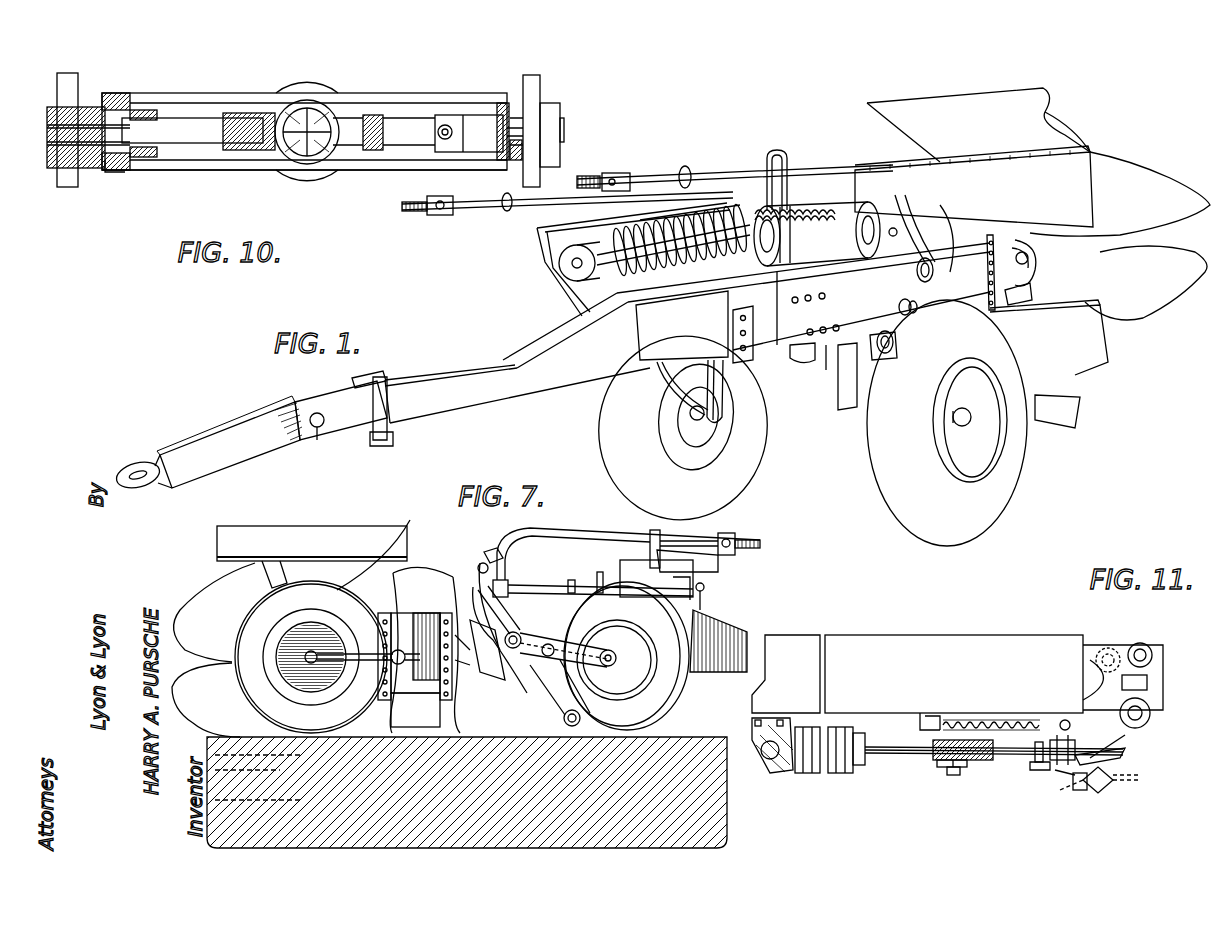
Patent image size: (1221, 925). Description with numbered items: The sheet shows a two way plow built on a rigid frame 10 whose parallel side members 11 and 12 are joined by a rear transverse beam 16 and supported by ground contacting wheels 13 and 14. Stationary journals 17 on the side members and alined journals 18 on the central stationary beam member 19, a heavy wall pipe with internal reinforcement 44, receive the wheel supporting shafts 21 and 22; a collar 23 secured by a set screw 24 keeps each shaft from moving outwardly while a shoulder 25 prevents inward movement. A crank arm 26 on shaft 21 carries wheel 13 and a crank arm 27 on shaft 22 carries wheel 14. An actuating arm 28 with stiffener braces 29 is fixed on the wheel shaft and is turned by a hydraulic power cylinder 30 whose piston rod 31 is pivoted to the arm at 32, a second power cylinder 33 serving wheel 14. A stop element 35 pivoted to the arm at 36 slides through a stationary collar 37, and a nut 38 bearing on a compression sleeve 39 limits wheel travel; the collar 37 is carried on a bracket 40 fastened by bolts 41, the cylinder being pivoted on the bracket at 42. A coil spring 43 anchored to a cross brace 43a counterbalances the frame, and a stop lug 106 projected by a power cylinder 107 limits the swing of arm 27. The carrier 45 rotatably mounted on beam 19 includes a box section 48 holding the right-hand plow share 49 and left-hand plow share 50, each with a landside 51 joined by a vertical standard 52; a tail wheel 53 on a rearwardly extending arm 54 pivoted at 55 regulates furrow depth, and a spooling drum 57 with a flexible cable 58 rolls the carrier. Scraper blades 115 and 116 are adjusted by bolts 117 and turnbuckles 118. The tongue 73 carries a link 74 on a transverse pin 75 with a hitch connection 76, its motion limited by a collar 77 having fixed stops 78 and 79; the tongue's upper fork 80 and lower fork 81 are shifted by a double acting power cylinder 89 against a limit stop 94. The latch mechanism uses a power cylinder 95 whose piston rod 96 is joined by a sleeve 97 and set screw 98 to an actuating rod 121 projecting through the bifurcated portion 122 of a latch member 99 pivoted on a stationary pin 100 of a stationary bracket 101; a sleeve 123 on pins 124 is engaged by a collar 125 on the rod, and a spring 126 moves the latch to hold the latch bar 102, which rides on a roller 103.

In FIG. 10, the rigid frame 10 is at (253, 184).
In FIG. 1, the rigid frame 10 is at (626, 353).
In FIG. 10, the side member 11 is at (118, 162).
In FIG. 10, the side member 12 is at (492, 170).
In FIG. 1, the side member 12 is at (880, 336).
In FIG. 1, the ground contacting wheel 13 is at (605, 435).
In FIG. 7, the ground contacting wheel 13 is at (690, 686).
In FIG. 1, the ground contacting wheel 14 is at (1010, 478).
In FIG. 7, the ground contacting wheel 14 is at (655, 733).
In FIG. 10, the rear transverse beam 16 is at (200, 95).
In FIG. 10, the stationary journal 17 is at (145, 112).
In FIG. 10, the alined journal 18 is at (250, 112).
In FIG. 10, the stationary beam member 19 is at (318, 112).
In FIG. 10, the wheel supporting shaft 21 is at (210, 142).
In FIG. 10, the wheel supporting shaft 22 is at (375, 148).
In FIG. 10, the collar 23 is at (153, 152).
In FIG. 10, the set screw 24 is at (447, 126).
In FIG. 10, the shoulder 25 is at (82, 170).
In FIG. 10, the crank arm 26 is at (62, 168).
In FIG. 1, the crank arm 26 is at (730, 408).
In FIG. 7, the crank arm 26 is at (585, 640).
In FIG. 10, the crank arm 27 is at (552, 140).
In FIG. 7, the crank arm 27 is at (585, 718).
In FIG. 1, the actuating arm 28 is at (925, 228).
In FIG. 7, the actuating arm 28 is at (478, 575).
In FIG. 1, the stiffener brace 29 is at (900, 225).
In FIG. 7, the stiffener brace 29 is at (500, 618).
In FIG. 1, the hydraulic power cylinder 30 is at (553, 290).
In FIG. 7, the hydraulic power cylinder 30 is at (700, 582).
In FIG. 7, the piston rod 31 is at (553, 586).
In FIG. 7, the pivotal connection 32 is at (505, 585).
In FIG. 1, the power cylinder 33 is at (823, 234).
In FIG. 1, the stop element 35 is at (738, 172).
In FIG. 7, the stop element 35 is at (605, 542).
In FIG. 7, the pivotal connection 36 is at (490, 552).
In FIG. 1, the stationary collar 37 is at (588, 176).
In FIG. 7, the stationary collar 37 is at (652, 540).
In FIG. 1, the nut 38 is at (618, 172).
In FIG. 7, the nut 38 is at (735, 536).
In FIG. 1, the compression sleeve 39 is at (683, 168).
In FIG. 7, the compression sleeve 39 is at (685, 542).
In FIG. 1, the bracket 40 is at (566, 308).
In FIG. 7, the bracket 40 is at (735, 558).
In FIG. 1, the bolt 41 is at (830, 345).
In FIG. 1, the pivotal mounting 42 is at (560, 270).
In FIG. 7, the pivotal mounting 42 is at (708, 596).
In FIG. 1, the coil spring 43 is at (650, 258).
In FIG. 1, the stationary cross brace 43a is at (700, 205).
In FIG. 10, the internal reinforcement 44 is at (320, 160).
In FIG. 1, the carrier 45 is at (1040, 246).
In FIG. 7, the carrier 45 is at (431, 689).
In FIG. 7, the box section 48 is at (428, 645).
In FIG. 1, the right-hand plow share 49 is at (1128, 187).
In FIG. 7, the right-hand plow share 49 is at (213, 582).
In FIG. 1, the left-hand plow share 50 is at (1145, 330).
In FIG. 7, the left-hand plow share 50 is at (190, 688).
In FIG. 1, the landside 51 is at (965, 100).
In FIG. 7, the landside 51 is at (305, 528).
In FIG. 7, the vertical standard 52 is at (365, 540).
In FIG. 7, the tail wheel 53 is at (245, 624).
In FIG. 7, the rearwardly extending arm 54 is at (345, 652).
In FIG. 7, the pivot point 55 is at (390, 662).
In FIG. 7, the spooling drum 57 is at (503, 667).
In FIG. 7, the flexible cable 58 is at (473, 667).
In FIG. 1, the tongue 73 is at (455, 376).
In FIG. 7, the tongue 73 is at (760, 635).
In FIG. 1, the link 74 is at (232, 432).
In FIG. 1, the transverse pin 75 is at (317, 430).
In FIG. 1, the hitch connection 76 is at (138, 462).
In FIG. 1, the collar 77 is at (390, 420).
In FIG. 1, the fixed stop 78 is at (370, 378).
In FIG. 1, the fixed stop 79 is at (373, 446).
In FIG. 1, the upper fork 80 is at (642, 325).
In FIG. 1, the lower fork 81 is at (662, 365).
In FIG. 1, the double acting power cylinder 89 is at (800, 348).
In FIG. 1, the limit stop 94 is at (733, 338).
In FIG. 1, the power cylinder 95 is at (888, 345).
In FIG. 11, the power cylinder 95 is at (818, 775).
In FIG. 11, the piston rod 96 is at (903, 758).
In FIG. 11, the sleeve 97 is at (935, 770).
In FIG. 11, the set screw 98 is at (960, 773).
In FIG. 11, the latch member 99 is at (1148, 732).
In FIG. 11, the stationary pin 100 is at (1140, 752).
In FIG. 11, the stationary bracket 101 is at (1105, 745).
In FIG. 11, the latch bar 102 is at (1145, 672).
In FIG. 11, the roller 103 is at (1150, 645).
In FIG. 1, the stop lug 106 is at (905, 310).
In FIG. 11, the power cylinder 107 is at (930, 612).
In FIG. 1, the scraper blade 115 is at (1085, 155).
In FIG. 7, the scraper blade 115 is at (415, 572).
In FIG. 1, the scraper blade 116 is at (1110, 358).
In FIG. 7, the scraper blade 116 is at (412, 710).
In FIG. 1, the bolt 117 is at (995, 238).
In FIG. 7, the bolt 117 is at (383, 610).
In FIG. 1, the turnbuckle 118 is at (1030, 284).
In FIG. 11, the actuating rod 121 is at (990, 757).
In FIG. 11, the bifurcated portion 122 is at (1080, 783).
In FIG. 11, the sleeve 123 is at (1062, 780).
In FIG. 11, the pin 124 is at (1045, 730).
In FIG. 11, the collar 125 is at (1040, 765).
In FIG. 11, the spring 126 is at (982, 718).